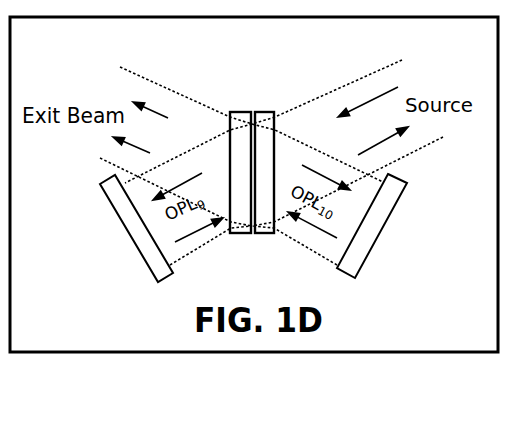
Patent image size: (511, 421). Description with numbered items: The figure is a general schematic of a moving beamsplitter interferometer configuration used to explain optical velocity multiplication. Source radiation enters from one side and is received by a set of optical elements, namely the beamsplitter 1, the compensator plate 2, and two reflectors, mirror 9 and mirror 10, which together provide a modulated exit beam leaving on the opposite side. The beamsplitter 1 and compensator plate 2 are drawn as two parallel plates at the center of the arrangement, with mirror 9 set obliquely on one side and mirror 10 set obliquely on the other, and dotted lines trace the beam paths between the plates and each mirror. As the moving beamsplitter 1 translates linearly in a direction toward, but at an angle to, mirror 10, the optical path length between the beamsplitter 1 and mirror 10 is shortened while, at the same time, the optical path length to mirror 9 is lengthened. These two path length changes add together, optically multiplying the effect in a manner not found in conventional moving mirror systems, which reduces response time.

The beamsplitter 1 is at (271, 173).
The compensator plate 2 is at (249, 173).
The mirror 9 is at (128, 237).
The mirror 10 is at (382, 232).